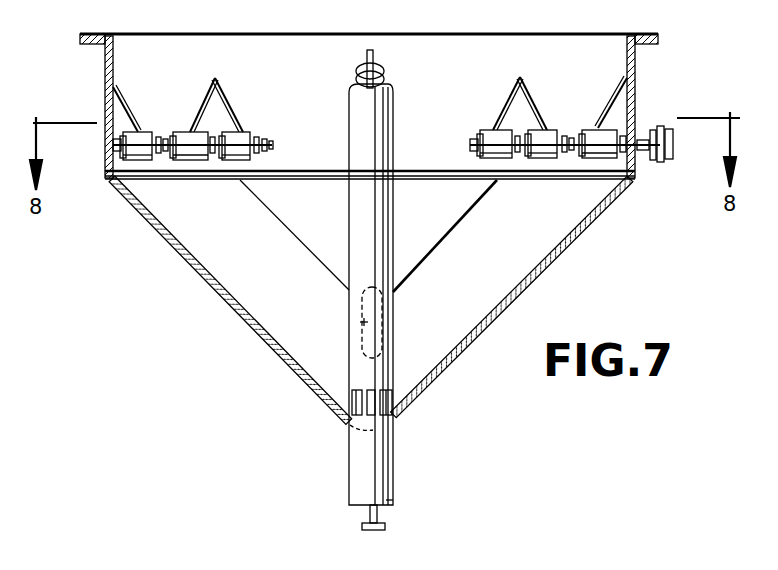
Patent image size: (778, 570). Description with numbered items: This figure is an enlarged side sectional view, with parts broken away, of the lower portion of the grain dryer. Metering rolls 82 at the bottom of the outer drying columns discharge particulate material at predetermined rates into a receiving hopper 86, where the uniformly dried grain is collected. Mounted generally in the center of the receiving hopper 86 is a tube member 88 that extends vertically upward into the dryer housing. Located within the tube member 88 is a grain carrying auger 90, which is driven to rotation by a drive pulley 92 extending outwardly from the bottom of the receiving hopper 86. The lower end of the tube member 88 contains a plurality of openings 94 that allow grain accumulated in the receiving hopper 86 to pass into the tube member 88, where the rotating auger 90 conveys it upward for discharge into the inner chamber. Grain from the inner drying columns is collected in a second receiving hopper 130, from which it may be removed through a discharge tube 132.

The metering roll 82 is at (566, 130).
The receiving hopper 86 is at (212, 282).
The tube member 88 is at (393, 222).
The grain carrying auger 90 is at (380, 71).
The drive pulley 92 is at (387, 527).
The openings 94 is at (397, 417).
The second receiving hopper 130 is at (427, 258).
The discharge tube 132 is at (362, 324).